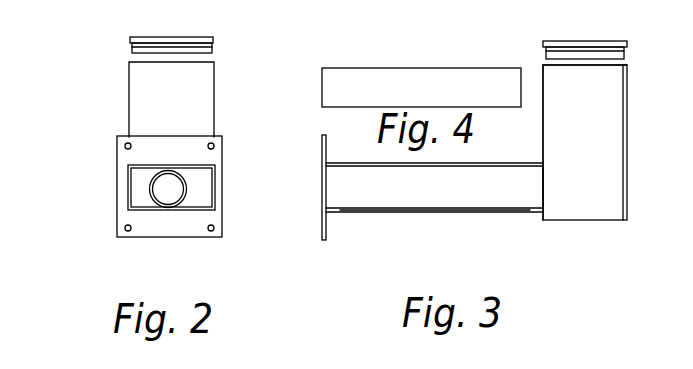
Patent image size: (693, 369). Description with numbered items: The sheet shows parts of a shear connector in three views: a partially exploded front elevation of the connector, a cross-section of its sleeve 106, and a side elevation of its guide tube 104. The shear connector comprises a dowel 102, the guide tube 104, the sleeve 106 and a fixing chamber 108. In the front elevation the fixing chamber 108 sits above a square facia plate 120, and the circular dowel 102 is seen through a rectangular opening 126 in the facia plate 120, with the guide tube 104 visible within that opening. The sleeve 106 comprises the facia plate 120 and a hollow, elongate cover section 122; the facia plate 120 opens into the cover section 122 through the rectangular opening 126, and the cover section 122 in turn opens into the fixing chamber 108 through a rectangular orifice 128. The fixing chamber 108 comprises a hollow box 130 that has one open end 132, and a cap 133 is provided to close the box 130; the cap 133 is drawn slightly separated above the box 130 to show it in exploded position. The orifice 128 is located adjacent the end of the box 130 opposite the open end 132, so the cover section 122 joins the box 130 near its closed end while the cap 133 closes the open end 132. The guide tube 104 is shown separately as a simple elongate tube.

In FIG. 2, the dowel 102 is at (168, 189).
In FIG. 3, the dowel 102 is at (685, 238).
In FIG. 2, the guide tube 104 is at (188, 192).
In FIG. 4, the guide tube 104 is at (410, 85).
In FIG. 2, the sleeve 106 is at (125, 148).
In FIG. 3, the sleeve 106 is at (340, 157).
In FIG. 2, the fixing chamber 108 is at (150, 103).
In FIG. 3, the fixing chamber 108 is at (602, 173).
In FIG. 2, the facia plate 120 is at (168, 223).
In FIG. 3, the facia plate 120 is at (323, 226).
In FIG. 3, the cover section 122 is at (417, 210).
In FIG. 2, the rectangular opening 126 is at (192, 200).
In FIG. 3, the rectangular opening 126 is at (333, 192).
In FIG. 3, the rectangular orifice 128 is at (545, 188).
In FIG. 3, the hollow box 130 is at (593, 140).
In FIG. 3, the open end 132 is at (592, 65).
In FIG. 2, the cap 133 is at (147, 50).
In FIG. 3, the cap 133 is at (560, 53).